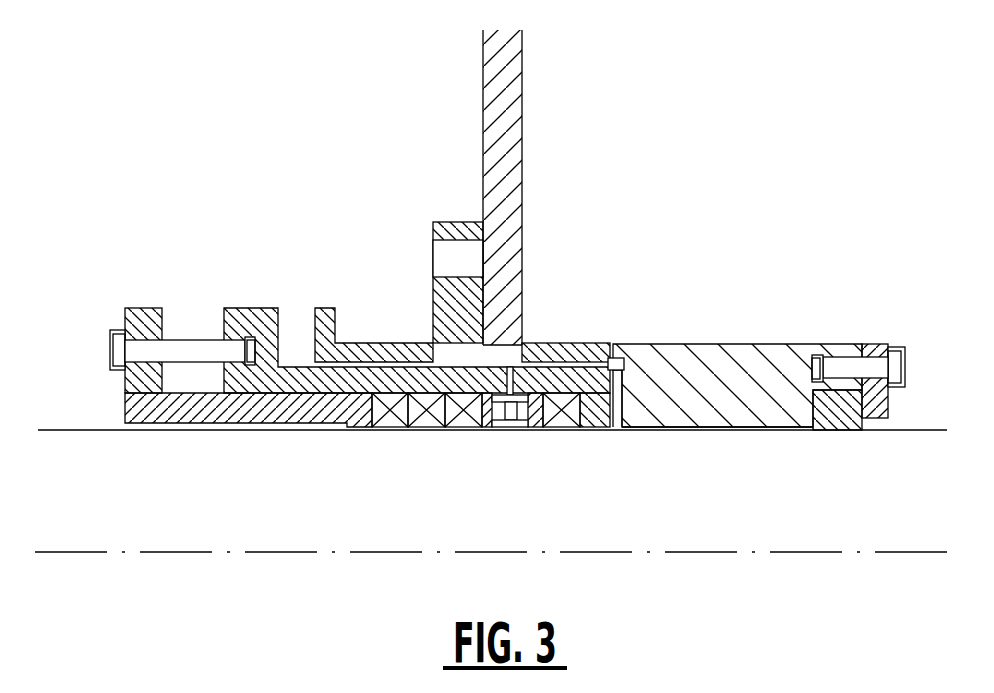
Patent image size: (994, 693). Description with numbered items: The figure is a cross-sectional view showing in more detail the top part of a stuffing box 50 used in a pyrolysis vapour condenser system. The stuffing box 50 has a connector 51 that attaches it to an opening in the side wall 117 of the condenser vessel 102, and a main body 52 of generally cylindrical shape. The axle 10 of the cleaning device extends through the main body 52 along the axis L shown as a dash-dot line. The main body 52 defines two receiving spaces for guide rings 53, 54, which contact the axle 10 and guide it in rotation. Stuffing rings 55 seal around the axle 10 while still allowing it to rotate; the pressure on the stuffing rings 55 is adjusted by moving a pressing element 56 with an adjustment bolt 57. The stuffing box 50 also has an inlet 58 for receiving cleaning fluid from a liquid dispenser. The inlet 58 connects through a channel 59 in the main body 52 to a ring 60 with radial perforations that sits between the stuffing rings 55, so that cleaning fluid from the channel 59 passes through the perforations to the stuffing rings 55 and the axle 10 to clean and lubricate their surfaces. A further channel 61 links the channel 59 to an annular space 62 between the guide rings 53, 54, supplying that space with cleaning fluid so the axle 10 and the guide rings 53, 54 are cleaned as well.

The stuffing box 50 is at (252, 222).
The connector 51 is at (460, 300).
The main body 52 is at (737, 370).
The guide ring 53 is at (597, 405).
The guide ring 54 is at (845, 416).
The stuffing rings 55 is at (390, 422).
The pressing element 56 is at (133, 390).
The adjustment bolt 57 is at (193, 352).
The inlet 58 is at (303, 286).
The channel 59 is at (578, 348).
The ring with radial perforations 60 is at (512, 421).
The further channel 61 is at (614, 381).
The annular space 62 is at (745, 421).
The side wall 117 is at (503, 98).
The condenser vessel 102 is at (807, 152).
The axle 10 is at (172, 526).
The longitudinal axis L is at (77, 552).